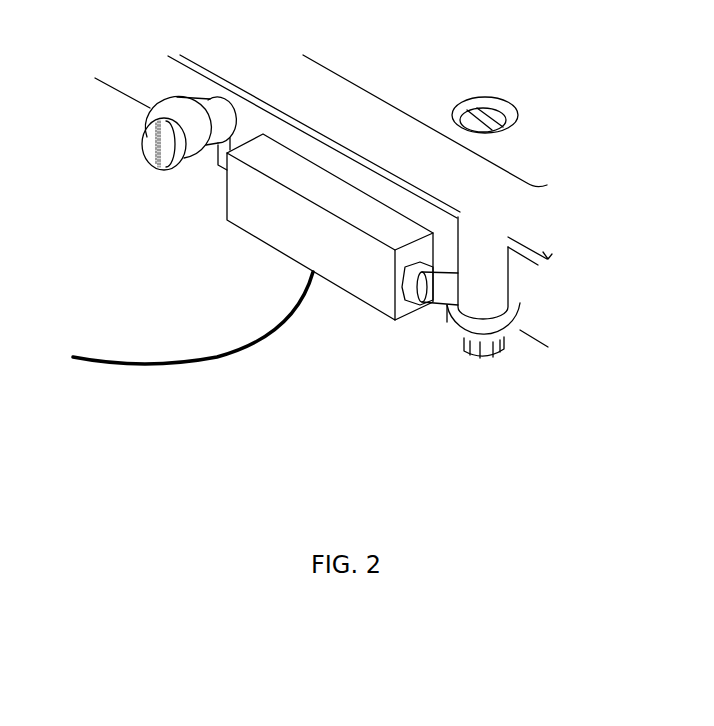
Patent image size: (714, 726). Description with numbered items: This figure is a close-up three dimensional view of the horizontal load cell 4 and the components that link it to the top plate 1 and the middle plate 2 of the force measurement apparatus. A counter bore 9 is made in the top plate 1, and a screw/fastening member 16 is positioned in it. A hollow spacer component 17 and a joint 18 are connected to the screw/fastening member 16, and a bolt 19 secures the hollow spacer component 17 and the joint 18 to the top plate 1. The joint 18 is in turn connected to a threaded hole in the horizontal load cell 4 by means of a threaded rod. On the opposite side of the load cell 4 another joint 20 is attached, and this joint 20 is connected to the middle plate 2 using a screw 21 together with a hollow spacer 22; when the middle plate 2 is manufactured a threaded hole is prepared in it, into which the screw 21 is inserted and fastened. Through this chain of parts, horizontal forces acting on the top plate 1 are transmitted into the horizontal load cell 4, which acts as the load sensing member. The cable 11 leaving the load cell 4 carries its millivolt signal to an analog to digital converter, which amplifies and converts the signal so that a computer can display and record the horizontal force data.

The top plate 1 is at (517, 210).
The middle plate 2 is at (137, 77).
The horizontal load cell 4 is at (293, 222).
The counter bore 9 is at (507, 110).
The cable 11 is at (165, 370).
The screw/fastening member 16 is at (485, 110).
The hollow spacer component 17 is at (488, 283).
The joint 18 is at (453, 323).
The bolt 19 is at (478, 358).
The joint 20 is at (207, 157).
The screw 21 is at (148, 142).
The hollow spacer 22 is at (217, 114).